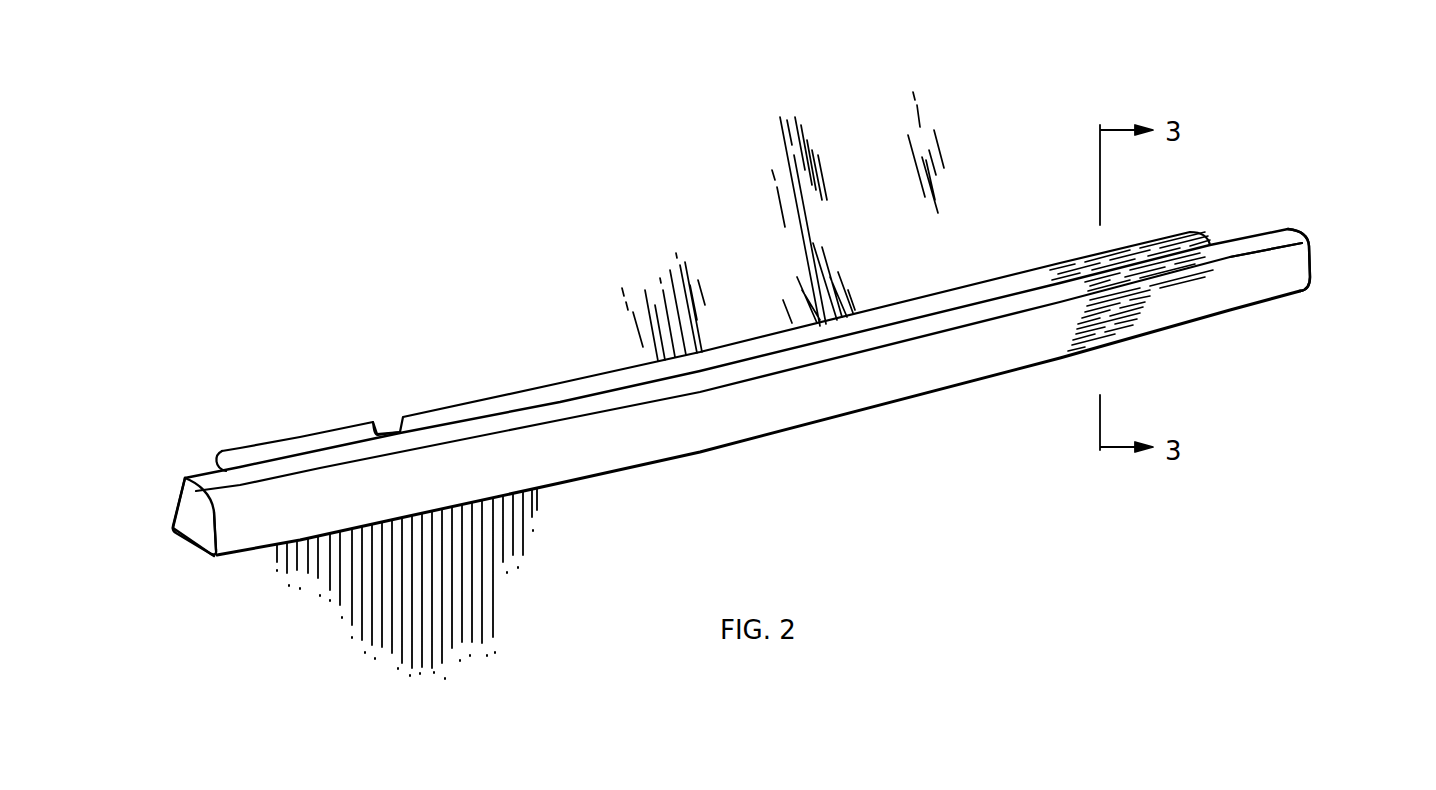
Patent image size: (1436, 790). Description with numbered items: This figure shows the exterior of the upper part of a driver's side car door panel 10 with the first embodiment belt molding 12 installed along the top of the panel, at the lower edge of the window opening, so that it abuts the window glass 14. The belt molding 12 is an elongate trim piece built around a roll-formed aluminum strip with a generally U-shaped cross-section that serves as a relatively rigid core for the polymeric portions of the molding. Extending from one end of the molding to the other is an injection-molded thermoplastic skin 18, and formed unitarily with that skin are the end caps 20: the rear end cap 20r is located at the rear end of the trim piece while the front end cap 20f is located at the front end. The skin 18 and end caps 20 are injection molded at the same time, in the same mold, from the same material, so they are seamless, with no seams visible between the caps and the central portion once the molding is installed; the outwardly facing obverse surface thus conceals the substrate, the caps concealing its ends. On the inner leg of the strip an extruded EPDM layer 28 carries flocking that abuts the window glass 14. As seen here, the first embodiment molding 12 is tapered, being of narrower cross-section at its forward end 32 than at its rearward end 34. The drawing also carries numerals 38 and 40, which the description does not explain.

The car door panel 10 is at (525, 547).
The belt molding 12 is at (263, 443).
The window glass 14 is at (700, 311).
The thermoplastic skin 18 is at (847, 393).
The end caps 20 is at (200, 528).
The rear end cap 20r is at (210, 542).
The front end cap 20f is at (1312, 265).
The EPDM layer 28 is at (512, 405).
The forward end 32 is at (1276, 275).
The rearward end 34 is at (203, 477).
The textured surface 38 is at (1222, 243).
The notch 40 is at (383, 427).